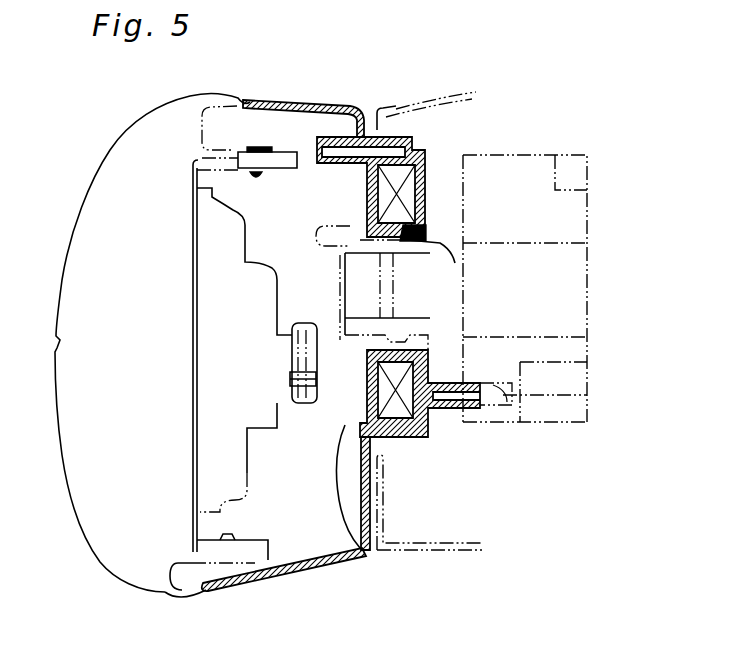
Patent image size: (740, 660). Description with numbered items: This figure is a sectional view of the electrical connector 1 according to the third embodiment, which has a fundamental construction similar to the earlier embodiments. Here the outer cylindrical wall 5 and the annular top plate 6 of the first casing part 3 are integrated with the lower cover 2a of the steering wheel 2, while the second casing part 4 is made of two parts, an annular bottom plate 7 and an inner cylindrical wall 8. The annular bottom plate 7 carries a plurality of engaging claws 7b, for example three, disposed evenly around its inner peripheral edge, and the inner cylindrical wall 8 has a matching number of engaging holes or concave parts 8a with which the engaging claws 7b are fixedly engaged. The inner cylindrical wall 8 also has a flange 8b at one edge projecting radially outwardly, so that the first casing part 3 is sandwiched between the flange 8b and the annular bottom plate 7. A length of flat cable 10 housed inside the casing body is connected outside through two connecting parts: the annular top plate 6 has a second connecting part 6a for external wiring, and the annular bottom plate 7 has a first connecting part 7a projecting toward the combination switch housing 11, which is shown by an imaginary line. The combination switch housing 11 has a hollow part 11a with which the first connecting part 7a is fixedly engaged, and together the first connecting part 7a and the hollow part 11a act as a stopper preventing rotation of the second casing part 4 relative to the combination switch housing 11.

The electrical connector 1 is at (419, 151).
The steering wheel 2 is at (80, 190).
The lower cover 2a is at (266, 582).
The first casing part 3 is at (452, 587).
The second casing part 4 is at (590, 110).
The outer cylindrical wall 5 is at (400, 440).
The annular top plate 6 is at (372, 549).
The second connecting part 6a is at (332, 137).
The annular bottom plate 7 is at (423, 197).
The first connecting part 7a is at (472, 410).
The engaging claws 7b is at (420, 236).
The inner cylindrical wall 8 is at (423, 213).
The engaging holes or concave parts 8a is at (455, 266).
The flange 8b is at (367, 218).
The flat cable 10 is at (367, 195).
The combination switch housing 11 is at (560, 425).
The hollow part 11a is at (588, 398).